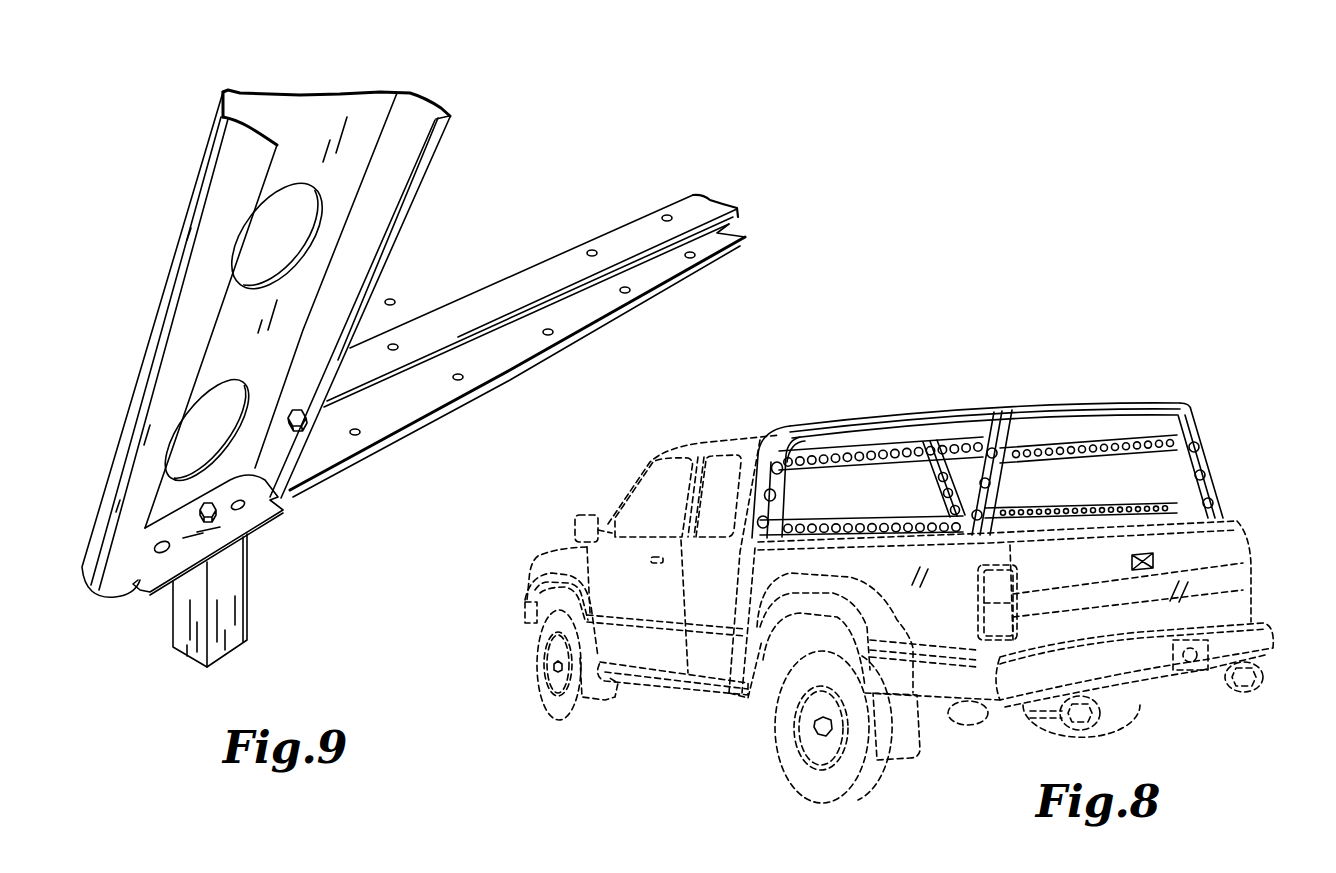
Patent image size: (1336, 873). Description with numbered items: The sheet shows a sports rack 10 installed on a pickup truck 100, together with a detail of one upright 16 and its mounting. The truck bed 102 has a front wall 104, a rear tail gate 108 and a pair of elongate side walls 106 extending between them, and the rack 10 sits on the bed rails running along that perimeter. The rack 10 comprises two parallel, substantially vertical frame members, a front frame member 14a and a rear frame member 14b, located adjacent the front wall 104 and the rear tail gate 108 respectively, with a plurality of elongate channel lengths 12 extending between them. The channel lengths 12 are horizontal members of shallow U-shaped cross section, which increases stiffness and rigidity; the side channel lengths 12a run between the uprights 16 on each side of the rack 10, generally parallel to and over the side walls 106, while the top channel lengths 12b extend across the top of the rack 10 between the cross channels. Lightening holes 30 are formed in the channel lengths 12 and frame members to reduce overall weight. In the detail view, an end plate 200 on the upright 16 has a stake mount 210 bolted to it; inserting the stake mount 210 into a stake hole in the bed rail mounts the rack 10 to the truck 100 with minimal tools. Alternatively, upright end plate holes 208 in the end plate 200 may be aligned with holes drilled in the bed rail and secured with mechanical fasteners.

In FIG. 8, the sports rack 10 is at (1020, 444).
In FIG. 9, the channel lengths 12 is at (620, 312).
In FIG. 8, the side channel lengths 12a is at (840, 527).
In FIG. 8, the top channel lengths 12b is at (958, 409).
In FIG. 8, the front frame member 14a is at (792, 432).
In FIG. 8, the rear frame member 14b is at (1183, 407).
In FIG. 9, the upright 16 is at (333, 93).
In FIG. 9, the lightening holes 30 is at (260, 252).
In FIG. 8, the truck 100 is at (747, 438).
In FIG. 9, the truck bed 102 is at (402, 204).
In FIG. 8, the truck bed 102 is at (1235, 522).
In FIG. 8, the front wall 104 is at (745, 545).
In FIG. 8, the side walls 106 is at (927, 583).
In FIG. 8, the rear tail gate 108 is at (1189, 585).
In FIG. 9, the end plate 200 is at (258, 508).
In FIG. 9, the upright end plate holes 208 is at (162, 552).
In FIG. 9, the stake mount 210 is at (240, 640).